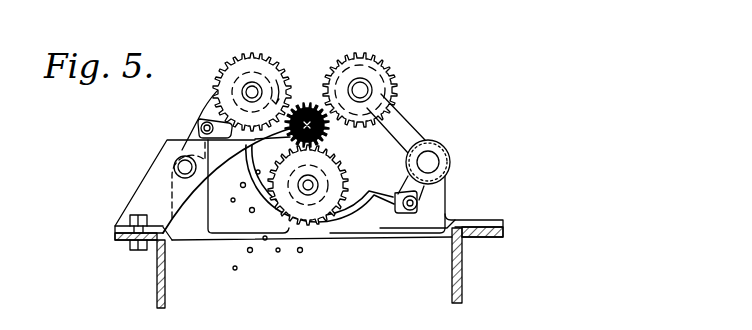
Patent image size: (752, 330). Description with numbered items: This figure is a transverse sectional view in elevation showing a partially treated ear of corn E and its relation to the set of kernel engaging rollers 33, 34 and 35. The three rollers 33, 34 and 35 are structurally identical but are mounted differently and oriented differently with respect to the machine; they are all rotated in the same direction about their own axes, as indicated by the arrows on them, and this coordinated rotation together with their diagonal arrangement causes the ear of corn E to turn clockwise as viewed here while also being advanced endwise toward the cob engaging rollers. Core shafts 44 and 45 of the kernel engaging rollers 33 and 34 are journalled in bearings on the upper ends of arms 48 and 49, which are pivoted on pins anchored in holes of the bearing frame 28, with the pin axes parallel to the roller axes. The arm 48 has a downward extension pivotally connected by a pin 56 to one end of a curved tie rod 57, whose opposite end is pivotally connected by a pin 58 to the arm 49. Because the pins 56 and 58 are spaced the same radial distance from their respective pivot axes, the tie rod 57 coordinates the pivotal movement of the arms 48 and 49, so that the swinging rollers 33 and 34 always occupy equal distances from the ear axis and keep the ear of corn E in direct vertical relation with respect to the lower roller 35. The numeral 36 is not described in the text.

The bearing frame 28 is at (429, 252).
The kernel engaging roller 33 is at (393, 72).
The kernel engaging roller 34 is at (260, 55).
The kernel engaging roller 35 is at (344, 186).
The shaft 36 is at (313, 187).
The core shaft 44 is at (363, 87).
The core shaft 45 is at (248, 85).
The arm 48 is at (412, 130).
The arm 49 is at (205, 110).
The pin 56 is at (423, 203).
The curved tie rod 57 is at (362, 213).
The pin 58 is at (199, 127).
The ear of corn E is at (337, 142).